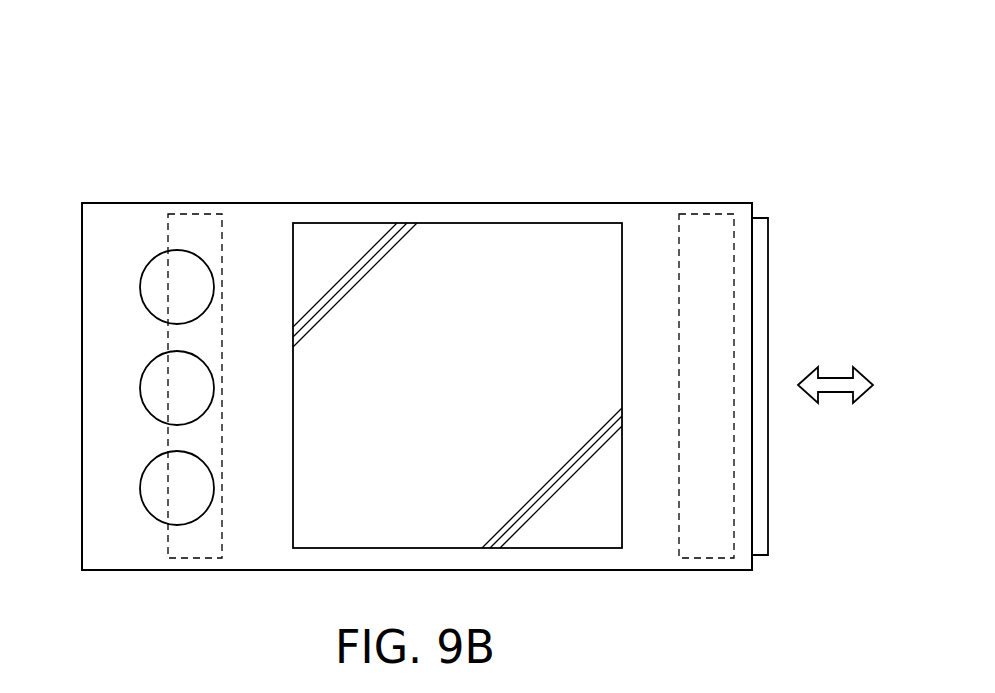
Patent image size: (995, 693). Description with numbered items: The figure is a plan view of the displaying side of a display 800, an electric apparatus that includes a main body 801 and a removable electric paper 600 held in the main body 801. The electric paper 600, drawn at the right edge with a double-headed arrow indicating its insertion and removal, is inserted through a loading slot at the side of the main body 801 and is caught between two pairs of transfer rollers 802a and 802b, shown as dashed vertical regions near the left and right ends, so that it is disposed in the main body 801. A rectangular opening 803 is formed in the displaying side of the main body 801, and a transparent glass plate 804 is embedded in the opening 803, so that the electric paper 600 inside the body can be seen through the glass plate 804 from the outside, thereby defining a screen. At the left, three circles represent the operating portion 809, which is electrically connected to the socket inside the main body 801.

The display 800 is at (397, 304).
The main body 801 is at (263, 217).
The transfer rollers 802a is at (197, 214).
The transfer rollers 802b is at (716, 214).
The rectangular opening 803 is at (457, 354).
The transparent glass plate 804 is at (473, 239).
The operating portion 809 is at (150, 257).
The electric paper 600 is at (770, 260).